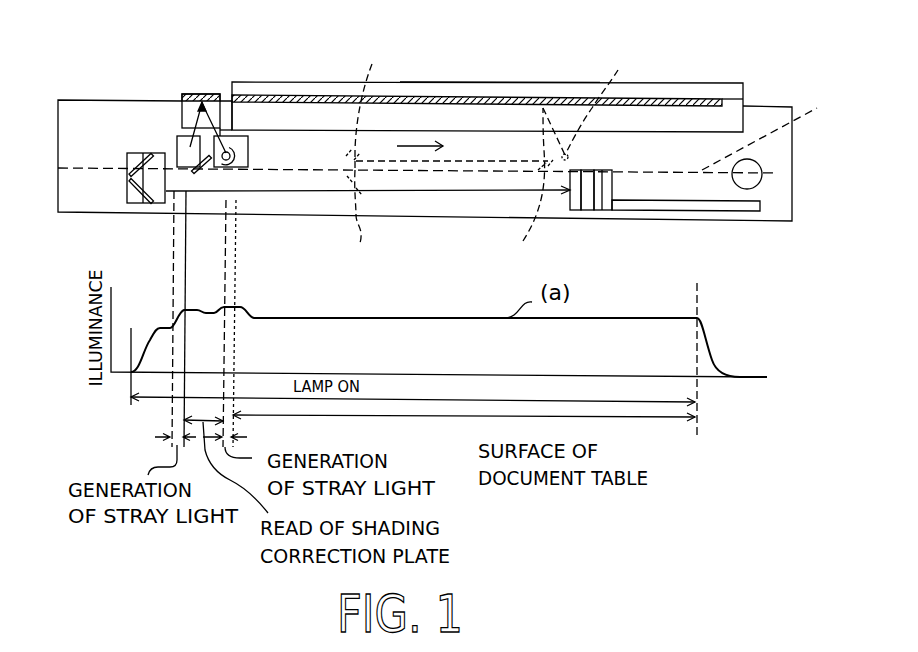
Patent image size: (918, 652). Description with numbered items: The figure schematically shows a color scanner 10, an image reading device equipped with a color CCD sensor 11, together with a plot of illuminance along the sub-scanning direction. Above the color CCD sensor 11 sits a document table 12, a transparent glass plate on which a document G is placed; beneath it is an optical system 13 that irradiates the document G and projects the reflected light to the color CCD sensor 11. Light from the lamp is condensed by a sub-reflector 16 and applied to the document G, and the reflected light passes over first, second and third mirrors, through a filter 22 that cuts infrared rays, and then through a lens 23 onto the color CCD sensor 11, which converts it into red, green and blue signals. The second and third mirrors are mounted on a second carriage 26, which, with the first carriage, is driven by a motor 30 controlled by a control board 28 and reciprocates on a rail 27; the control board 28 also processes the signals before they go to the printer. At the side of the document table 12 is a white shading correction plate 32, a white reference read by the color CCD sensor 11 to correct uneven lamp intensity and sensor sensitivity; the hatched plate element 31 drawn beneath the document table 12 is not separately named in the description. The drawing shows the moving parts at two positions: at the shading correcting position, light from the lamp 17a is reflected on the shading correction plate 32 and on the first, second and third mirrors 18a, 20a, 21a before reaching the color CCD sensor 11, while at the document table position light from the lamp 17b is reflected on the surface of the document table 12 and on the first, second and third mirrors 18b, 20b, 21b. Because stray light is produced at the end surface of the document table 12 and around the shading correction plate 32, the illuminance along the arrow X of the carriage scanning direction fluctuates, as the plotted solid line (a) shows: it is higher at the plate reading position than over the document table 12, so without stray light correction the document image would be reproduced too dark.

The color scanner 10 is at (462, 57).
The color CCD sensor 11 is at (603, 208).
The document table 12 is at (722, 118).
The optical system 13 is at (233, 182).
The sub-reflector 16 is at (190, 147).
The lamp at shading correcting position 17a is at (229, 151).
The lamp at document table position 17b is at (592, 101).
The first mirror at shading correcting position 18a is at (205, 180).
The first mirror at document table position 18b is at (529, 187).
The second mirror at shading correcting position 20a is at (133, 153).
The second mirror at document table position 20b is at (447, 106).
The third mirror at shading correcting position 21a is at (147, 207).
The third mirror at document table position 21b is at (354, 218).
The filter 22 is at (577, 208).
The lens 23 is at (588, 208).
The second carriage 26 is at (122, 197).
The rail 27 is at (769, 122).
The control board 28 is at (690, 208).
The motor 30 is at (760, 163).
The shading correction plate 31 is at (563, 83).
The shading correction plate 32 is at (195, 93).
The document G is at (507, 95).
The scanning direction X is at (415, 145).